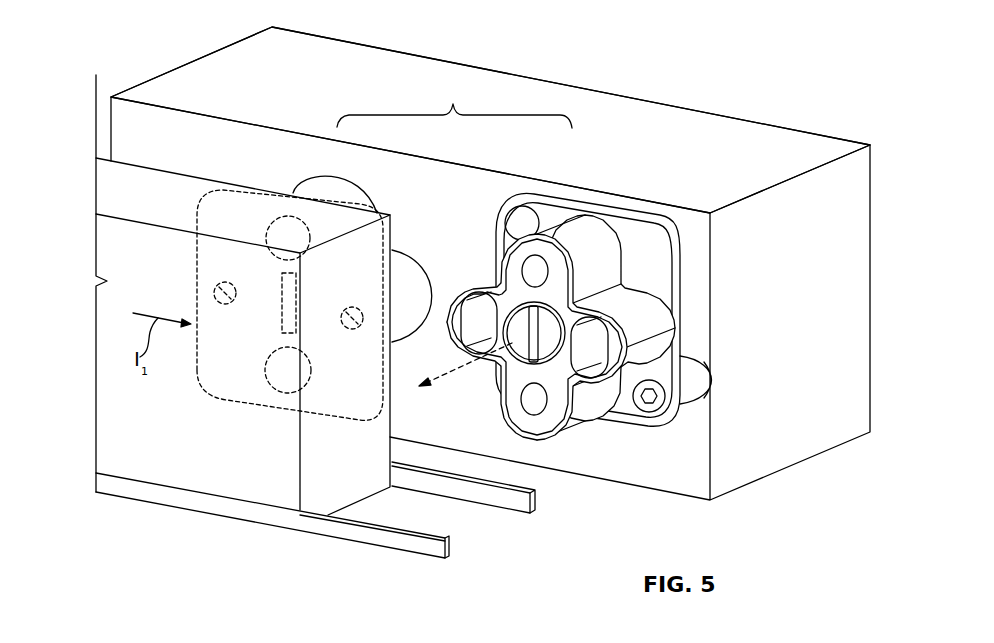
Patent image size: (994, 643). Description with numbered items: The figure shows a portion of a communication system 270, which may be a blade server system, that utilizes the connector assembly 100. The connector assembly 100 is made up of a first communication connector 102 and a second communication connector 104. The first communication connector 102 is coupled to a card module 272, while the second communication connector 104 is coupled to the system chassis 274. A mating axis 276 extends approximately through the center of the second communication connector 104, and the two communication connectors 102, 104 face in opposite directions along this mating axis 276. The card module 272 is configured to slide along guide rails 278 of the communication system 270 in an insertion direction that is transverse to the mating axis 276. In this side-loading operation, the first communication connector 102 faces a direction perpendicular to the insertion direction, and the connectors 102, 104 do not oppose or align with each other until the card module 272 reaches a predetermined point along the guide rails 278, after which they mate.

The connector assembly 100 is at (453, 101).
The first communication connector 102 is at (315, 186).
The second communication connector 104 is at (635, 212).
The communication system 270 is at (724, 63).
The card module 272 is at (168, 188).
The system chassis 274 is at (228, 66).
The mating axis 276 is at (452, 370).
The guide rails 278 is at (455, 539).